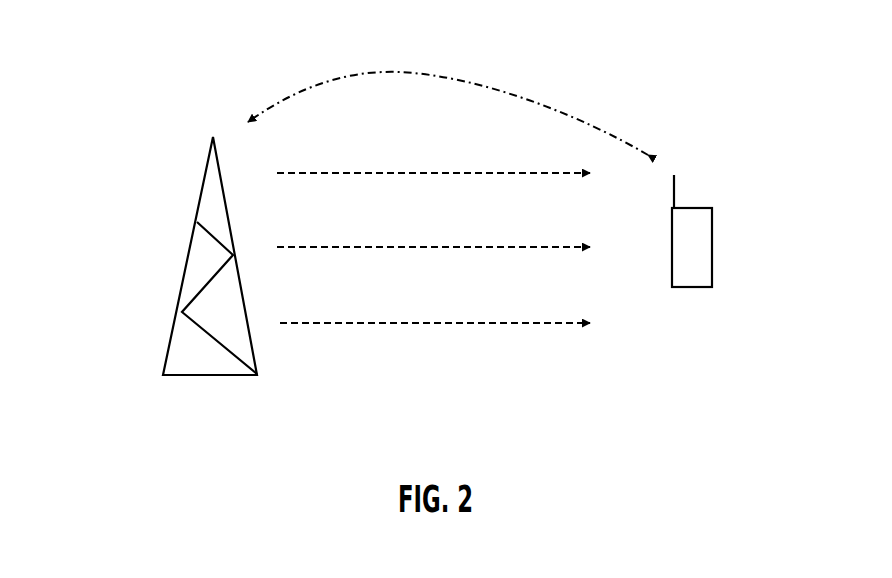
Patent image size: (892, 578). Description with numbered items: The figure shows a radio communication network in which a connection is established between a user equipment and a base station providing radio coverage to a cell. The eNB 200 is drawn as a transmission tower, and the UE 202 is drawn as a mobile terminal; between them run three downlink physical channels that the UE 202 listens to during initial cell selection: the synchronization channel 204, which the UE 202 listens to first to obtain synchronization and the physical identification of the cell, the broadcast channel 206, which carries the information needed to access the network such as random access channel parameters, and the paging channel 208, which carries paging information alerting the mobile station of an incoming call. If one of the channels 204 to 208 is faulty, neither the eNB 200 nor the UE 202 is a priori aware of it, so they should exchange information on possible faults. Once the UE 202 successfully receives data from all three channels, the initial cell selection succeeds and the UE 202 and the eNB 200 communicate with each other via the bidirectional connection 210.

The eNB 200 is at (172, 325).
The UE 202 is at (707, 288).
The synchronization channel 204 is at (420, 322).
The broadcast channel 206 is at (422, 246).
The paging channel 208 is at (420, 172).
The connection 210 is at (510, 93).